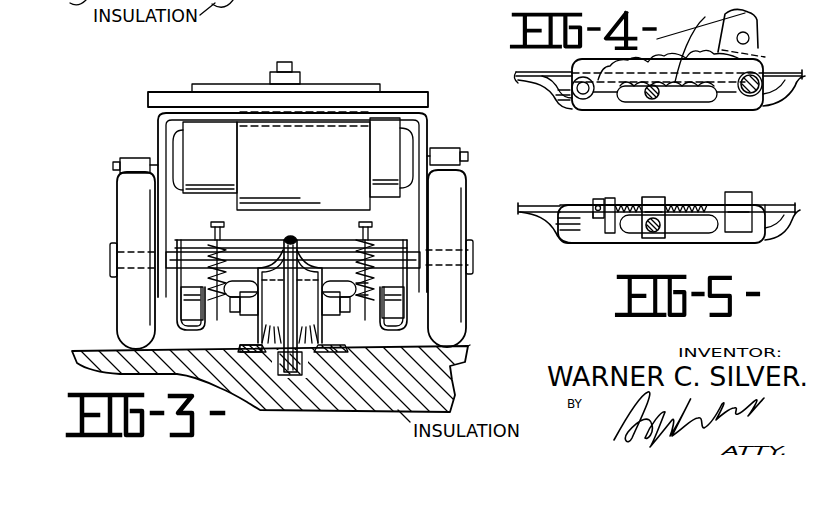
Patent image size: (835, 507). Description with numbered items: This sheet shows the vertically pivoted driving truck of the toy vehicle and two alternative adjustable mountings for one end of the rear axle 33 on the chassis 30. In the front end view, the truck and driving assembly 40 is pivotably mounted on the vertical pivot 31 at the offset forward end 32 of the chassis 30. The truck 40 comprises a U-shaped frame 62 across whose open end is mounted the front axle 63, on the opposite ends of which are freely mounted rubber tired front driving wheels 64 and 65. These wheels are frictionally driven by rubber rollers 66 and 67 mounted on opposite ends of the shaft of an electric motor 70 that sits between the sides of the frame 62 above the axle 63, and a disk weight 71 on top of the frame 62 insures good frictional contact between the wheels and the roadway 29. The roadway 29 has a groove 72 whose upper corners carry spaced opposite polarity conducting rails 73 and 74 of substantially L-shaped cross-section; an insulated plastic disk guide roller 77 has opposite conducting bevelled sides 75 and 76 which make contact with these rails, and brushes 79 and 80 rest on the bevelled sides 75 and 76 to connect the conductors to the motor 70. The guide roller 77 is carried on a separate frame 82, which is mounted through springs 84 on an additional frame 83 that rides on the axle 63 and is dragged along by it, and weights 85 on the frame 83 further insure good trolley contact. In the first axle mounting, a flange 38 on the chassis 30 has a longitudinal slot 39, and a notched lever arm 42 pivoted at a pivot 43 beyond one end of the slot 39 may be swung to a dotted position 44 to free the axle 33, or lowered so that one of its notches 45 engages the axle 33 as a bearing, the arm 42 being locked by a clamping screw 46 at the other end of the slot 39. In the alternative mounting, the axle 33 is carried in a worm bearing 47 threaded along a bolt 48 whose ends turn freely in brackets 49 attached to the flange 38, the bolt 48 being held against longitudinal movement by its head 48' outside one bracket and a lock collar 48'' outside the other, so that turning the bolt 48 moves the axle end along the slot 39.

In FIG. 3, the roadway 29 is at (466, 348).
In FIG. 4, the chassis 30 is at (556, 81).
In FIG. 5, the chassis 30 is at (556, 204).
In FIG. 3, the vertical pivot 31 is at (277, 66).
In FIG. 3, the forward end 32 is at (345, 66).
In FIG. 4, the rear axle 33 is at (651, 100).
In FIG. 5, the rear axle 33 is at (652, 232).
In FIG. 4, the flange 38 is at (755, 108).
In FIG. 5, the flange 38 is at (762, 236).
In FIG. 4, the longitudinal slot 39 is at (695, 102).
In FIG. 5, the longitudinal slot 39 is at (695, 235).
In FIG. 3, the truck and driving assembly 40 is at (439, 120).
In FIG. 4, the notched lever arm 42 is at (764, 61).
In FIG. 4, the pivot 43 is at (583, 96).
In FIG. 4, the dotted position 44 is at (756, 9).
In FIG. 4, the notch 45 is at (701, 41).
In FIG. 4, the clamping screw 46 is at (762, 88).
In FIG. 5, the worm bearing 47 is at (660, 178).
In FIG. 5, the bolt 48 is at (677, 190).
In FIG. 5, the head 48' is at (791, 221).
In FIG. 5, the lock collar 48'' is at (594, 242).
In FIG. 5, the brackets 49 is at (608, 198).
In FIG. 3, the U-shaped frame 62 is at (158, 123).
In FIG. 3, the front axle 63 is at (240, 256).
In FIG. 3, the front driving wheel 64 is at (117, 212).
In FIG. 3, the front driving wheel 65 is at (460, 232).
In FIG. 3, the rubber roller 66 is at (125, 157).
In FIG. 3, the rubber roller 67 is at (458, 150).
In FIG. 3, the electric motor 70 is at (293, 164).
In FIG. 3, the disk weight 71 is at (414, 84).
In FIG. 3, the groove 72 is at (291, 377).
In FIG. 3, the conducting rail 73 is at (280, 355).
In FIG. 3, the conducting rail 74 is at (332, 378).
In FIG. 3, the bevelled conducting side 75 is at (262, 341).
In FIG. 3, the bevelled conducting side 76 is at (318, 333).
In FIG. 3, the insulated guide roller 77 is at (289, 244).
In FIG. 3, the brush 79 is at (261, 296).
In FIG. 3, the brush 80 is at (323, 296).
In FIG. 3, the separate frame 82 is at (372, 314).
In FIG. 3, the additional separate frame 83 is at (181, 308).
In FIG. 3, the springs 84 is at (213, 244).
In FIG. 3, the weights 85 is at (200, 324).